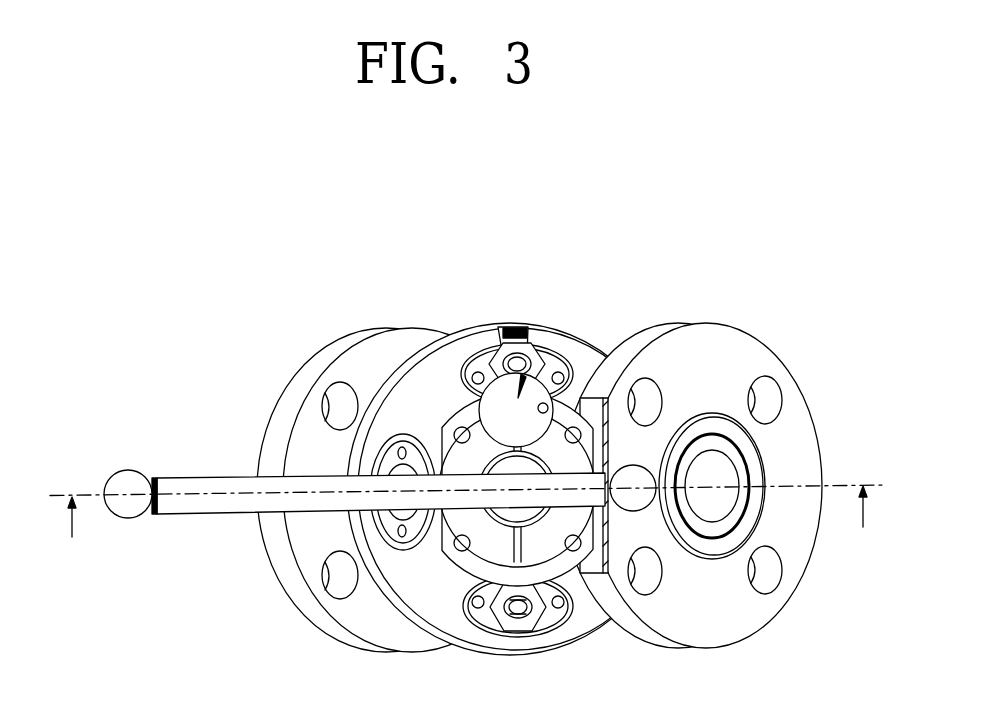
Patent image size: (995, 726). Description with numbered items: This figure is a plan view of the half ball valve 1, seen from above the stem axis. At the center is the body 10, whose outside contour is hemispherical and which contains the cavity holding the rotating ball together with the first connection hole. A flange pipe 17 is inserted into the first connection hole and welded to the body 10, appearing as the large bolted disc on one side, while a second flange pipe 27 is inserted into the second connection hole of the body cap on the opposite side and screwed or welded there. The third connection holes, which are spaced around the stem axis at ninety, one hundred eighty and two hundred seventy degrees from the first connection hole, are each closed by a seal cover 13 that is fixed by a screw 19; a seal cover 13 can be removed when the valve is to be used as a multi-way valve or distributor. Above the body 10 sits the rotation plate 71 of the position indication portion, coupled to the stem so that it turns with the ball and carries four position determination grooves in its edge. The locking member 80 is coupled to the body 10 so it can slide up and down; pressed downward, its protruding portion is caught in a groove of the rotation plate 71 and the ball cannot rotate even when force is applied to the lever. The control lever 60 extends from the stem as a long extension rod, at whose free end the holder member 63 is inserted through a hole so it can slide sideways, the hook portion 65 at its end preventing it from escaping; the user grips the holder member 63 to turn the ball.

The half ball valve 1 is at (365, 295).
The body 10 is at (418, 600).
The seal cover 13 is at (563, 340).
The flange pipe 17 is at (726, 337).
The screw 19 is at (498, 357).
The flange pipe 27 is at (313, 358).
The control lever 60 is at (306, 510).
The holder member 63 is at (185, 509).
The hook portion 65 is at (133, 516).
The rotation plate 71 is at (559, 540).
The locking member 80 is at (520, 335).